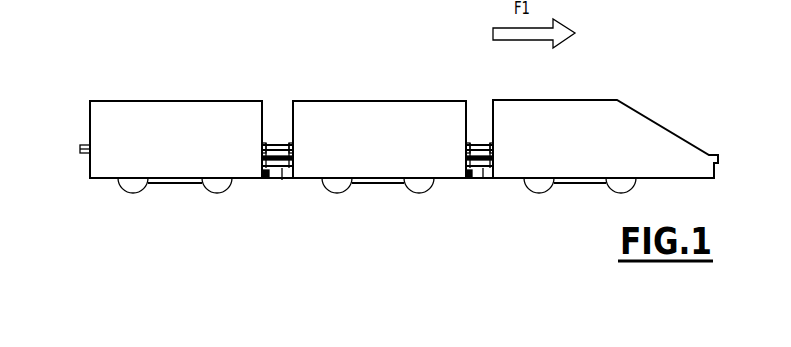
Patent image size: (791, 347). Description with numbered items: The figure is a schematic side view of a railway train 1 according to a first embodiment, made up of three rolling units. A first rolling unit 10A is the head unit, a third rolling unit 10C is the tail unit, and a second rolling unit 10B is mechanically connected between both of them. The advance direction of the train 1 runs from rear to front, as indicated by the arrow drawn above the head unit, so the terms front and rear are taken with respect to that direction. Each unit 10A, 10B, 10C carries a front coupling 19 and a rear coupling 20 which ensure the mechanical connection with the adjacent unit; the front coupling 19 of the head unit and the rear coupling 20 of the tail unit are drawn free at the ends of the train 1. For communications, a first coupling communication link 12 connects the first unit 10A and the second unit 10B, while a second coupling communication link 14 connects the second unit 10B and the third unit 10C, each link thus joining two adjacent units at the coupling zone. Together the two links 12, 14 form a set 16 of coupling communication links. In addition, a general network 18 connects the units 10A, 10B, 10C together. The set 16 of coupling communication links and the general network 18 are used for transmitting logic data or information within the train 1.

The railway train 1 is at (107, 70).
The first rolling unit 10A is at (558, 100).
The second rolling unit 10B is at (350, 101).
The third rolling unit 10C is at (148, 101).
The first coupling communication link 12 is at (483, 179).
The second coupling communication link 14 is at (282, 180).
The set of coupling communication links 16 is at (288, 183).
The general network 18 is at (266, 176).
The front coupling 19 is at (268, 143).
The rear coupling 20 is at (82, 148).